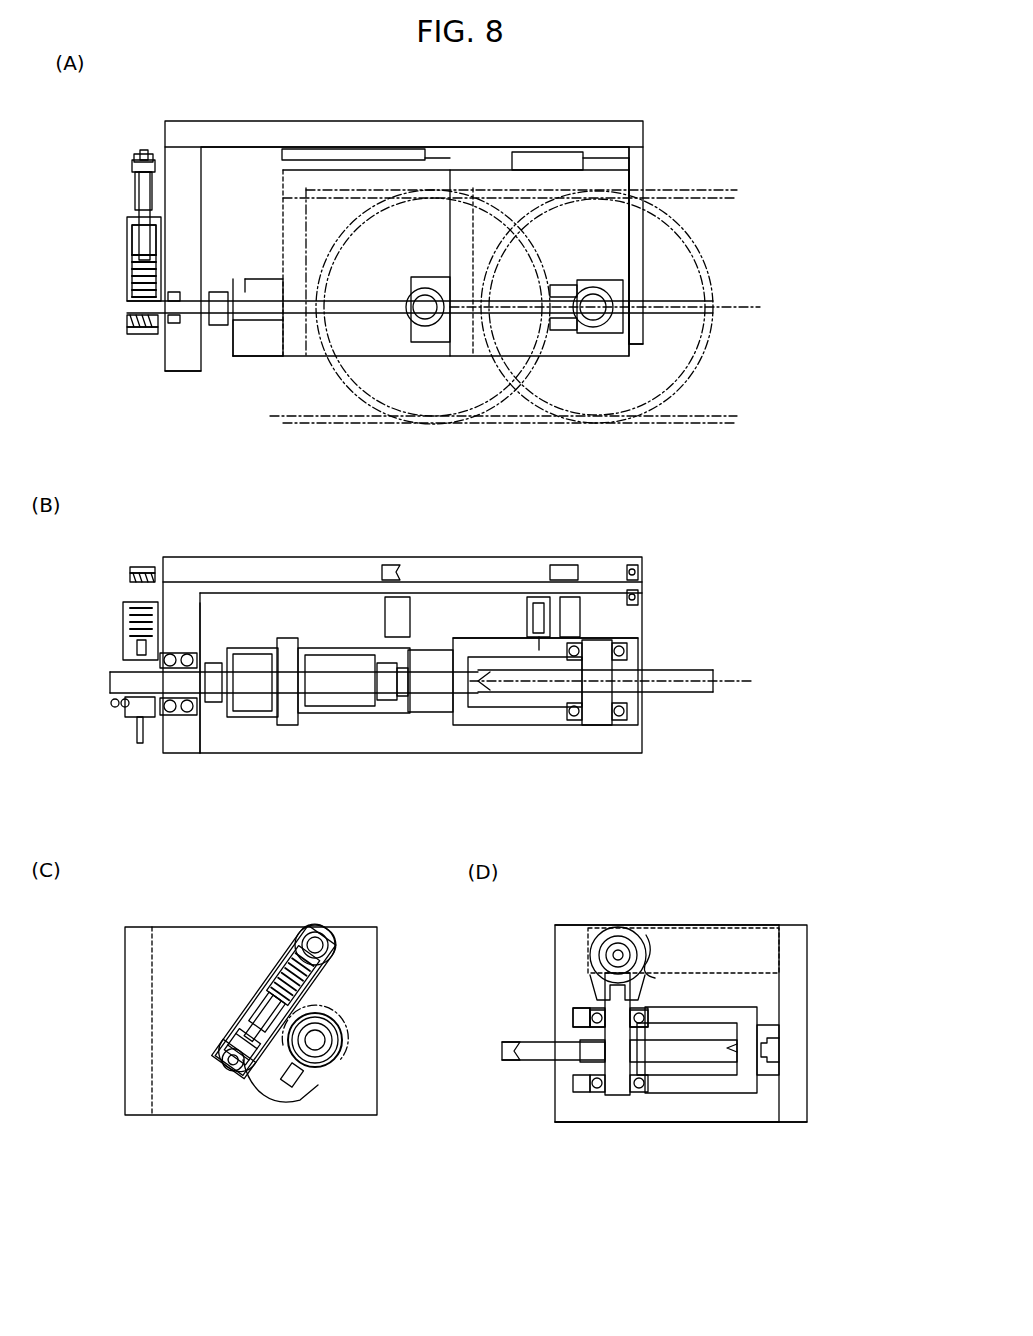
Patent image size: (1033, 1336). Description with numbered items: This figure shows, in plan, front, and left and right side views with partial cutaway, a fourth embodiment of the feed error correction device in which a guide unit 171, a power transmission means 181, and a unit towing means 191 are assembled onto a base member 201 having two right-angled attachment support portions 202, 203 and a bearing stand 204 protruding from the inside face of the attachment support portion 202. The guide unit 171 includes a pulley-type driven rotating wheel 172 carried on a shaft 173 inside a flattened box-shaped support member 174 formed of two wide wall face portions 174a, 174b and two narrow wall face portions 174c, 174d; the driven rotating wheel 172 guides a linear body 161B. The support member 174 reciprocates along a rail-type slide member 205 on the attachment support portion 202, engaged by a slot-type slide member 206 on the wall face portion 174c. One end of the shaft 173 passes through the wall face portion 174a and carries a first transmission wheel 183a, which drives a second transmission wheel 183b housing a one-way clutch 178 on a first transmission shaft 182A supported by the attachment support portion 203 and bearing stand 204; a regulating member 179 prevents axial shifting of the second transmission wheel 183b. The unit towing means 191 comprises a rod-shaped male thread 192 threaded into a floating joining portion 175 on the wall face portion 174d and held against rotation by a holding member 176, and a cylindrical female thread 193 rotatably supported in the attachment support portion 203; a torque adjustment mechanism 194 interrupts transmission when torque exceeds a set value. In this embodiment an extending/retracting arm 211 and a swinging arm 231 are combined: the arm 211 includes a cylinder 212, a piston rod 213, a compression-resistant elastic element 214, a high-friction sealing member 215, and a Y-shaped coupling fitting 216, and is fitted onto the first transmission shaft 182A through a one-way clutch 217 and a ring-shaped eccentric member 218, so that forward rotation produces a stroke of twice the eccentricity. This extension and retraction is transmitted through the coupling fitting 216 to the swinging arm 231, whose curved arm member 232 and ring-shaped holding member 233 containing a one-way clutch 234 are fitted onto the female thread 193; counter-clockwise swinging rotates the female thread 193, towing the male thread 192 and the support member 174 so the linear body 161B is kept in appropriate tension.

The linear body 161B is at (737, 196).
The guide unit 171 is at (482, 160).
The driven rotating wheel 172 is at (670, 317).
The shaft 173 is at (596, 700).
The support member 174 is at (531, 188).
The wall face portion 174a is at (627, 342).
The wall face portion 174b is at (523, 713).
The wall face portion 174c is at (610, 177).
The wall face portion 174d is at (461, 342).
The joining portion 175 is at (395, 345).
The holding member 176 is at (421, 352).
The one-way clutch 178 is at (559, 330).
The regulating member 179 is at (536, 600).
The power transmission means 181 is at (268, 322).
The first transmission shaft 182A is at (252, 306).
The first transmission wheel 183a is at (637, 288).
The second transmission wheel 183b is at (565, 335).
The unit towing means 191 is at (118, 298).
The male thread 192 is at (125, 680).
The female thread 193 is at (123, 707).
The torque adjustment mechanism 194 is at (290, 1075).
The base member 201 is at (162, 118).
The attachment support portion 202 is at (411, 127).
The attachment support portion 203 is at (185, 358).
The bearing stand 204 is at (636, 179).
The slide member 205 is at (290, 150).
The slide member 206 is at (577, 150).
The extending/retracting arm 211 is at (125, 191).
The cylinder 212 is at (125, 246).
The piston rod 213 is at (137, 212).
The compression-resistant elastic element 214 is at (127, 277).
The sealing member 215 is at (125, 218).
The coupling fitting 216 is at (137, 158).
The one-way clutch 217 is at (129, 330).
The eccentric member 218 is at (127, 318).
The swinging arm 231 is at (232, 1080).
The arm member 232 is at (141, 158).
The holding member 233 is at (345, 1038).
The one-way clutch 234 is at (115, 670).